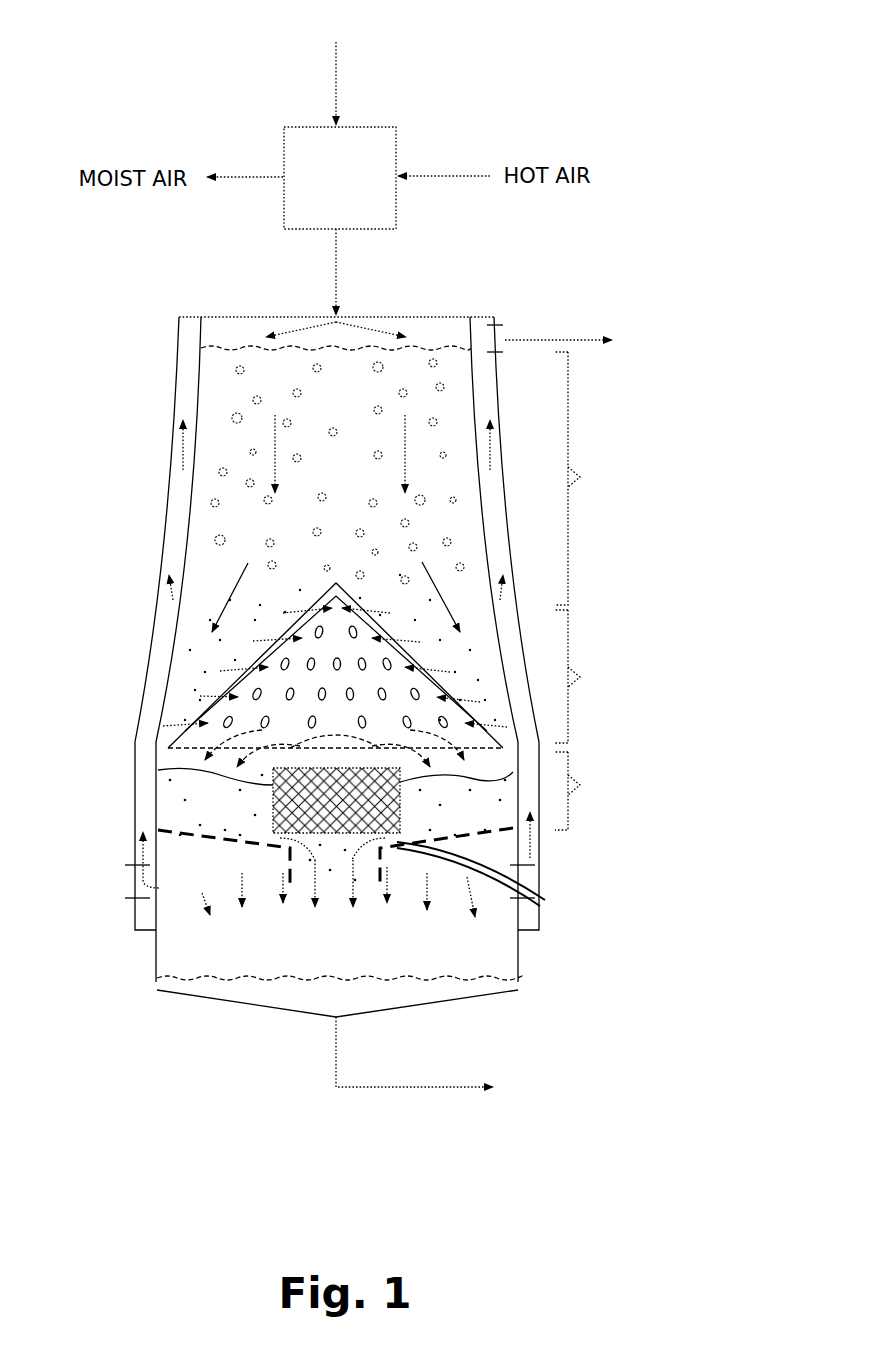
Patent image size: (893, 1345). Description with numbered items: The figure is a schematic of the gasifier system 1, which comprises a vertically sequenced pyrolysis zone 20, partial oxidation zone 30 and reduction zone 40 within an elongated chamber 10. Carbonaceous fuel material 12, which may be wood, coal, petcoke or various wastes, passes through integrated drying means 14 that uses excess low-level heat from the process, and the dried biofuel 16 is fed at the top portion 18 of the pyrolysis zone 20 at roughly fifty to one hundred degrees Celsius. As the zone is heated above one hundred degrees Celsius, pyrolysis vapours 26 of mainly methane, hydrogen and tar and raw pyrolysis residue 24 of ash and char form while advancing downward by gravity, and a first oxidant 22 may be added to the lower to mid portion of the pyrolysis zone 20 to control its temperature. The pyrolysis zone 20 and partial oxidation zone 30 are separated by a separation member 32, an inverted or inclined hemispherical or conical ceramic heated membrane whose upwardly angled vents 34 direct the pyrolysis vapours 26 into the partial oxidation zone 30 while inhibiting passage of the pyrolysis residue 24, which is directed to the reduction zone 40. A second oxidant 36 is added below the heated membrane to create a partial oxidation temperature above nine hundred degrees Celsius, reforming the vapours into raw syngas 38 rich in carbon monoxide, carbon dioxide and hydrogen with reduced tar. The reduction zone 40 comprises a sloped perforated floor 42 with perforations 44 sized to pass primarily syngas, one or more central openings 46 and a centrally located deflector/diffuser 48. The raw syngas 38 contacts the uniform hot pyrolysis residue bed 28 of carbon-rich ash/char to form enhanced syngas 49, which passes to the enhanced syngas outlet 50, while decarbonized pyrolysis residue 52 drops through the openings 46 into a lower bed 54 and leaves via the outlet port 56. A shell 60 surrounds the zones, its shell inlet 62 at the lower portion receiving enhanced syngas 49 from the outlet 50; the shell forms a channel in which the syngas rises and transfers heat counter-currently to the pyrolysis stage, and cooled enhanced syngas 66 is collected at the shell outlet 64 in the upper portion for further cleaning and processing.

The system 1 is at (24, 986).
The elongated chamber 10 is at (324, 622).
The carbonaceous fuel material 12 is at (336, 64).
The integrated drying means 14 is at (327, 190).
The biofuel 16 is at (336, 268).
The top portion 18 is at (435, 316).
The pyrolysis zone 20 is at (568, 530).
The first oxidant 22 is at (220, 568).
The raw pyrolysis residue 24 is at (183, 687).
The pyrolysis vapours 26 is at (225, 668).
The pyrolysis residue bed 28 is at (162, 888).
The partial oxidation zone 30 is at (568, 718).
The separation member 32 is at (470, 708).
The upwardly angled vents 34 is at (450, 685).
The second oxidant 36 is at (298, 715).
The raw syngas 38 is at (334, 750).
The reduction zone 40 is at (568, 820).
The sloped perforated floor 42 is at (545, 900).
The perforations 44 is at (407, 850).
The openings 46 is at (338, 858).
The deflector/diffuser 48 is at (400, 800).
The enhanced syngas 49 is at (140, 840).
The enhanced syngas outlet 50 is at (178, 900).
The decarbonized pyrolysis residue 52 is at (257, 907).
The lower bed 54 is at (375, 1002).
The outlet port 56 is at (335, 1018).
The shell 60 is at (175, 420).
The shell inlet 62 is at (150, 880).
The shell outlet 64 is at (500, 322).
The cooled enhanced syngas 66 is at (569, 326).